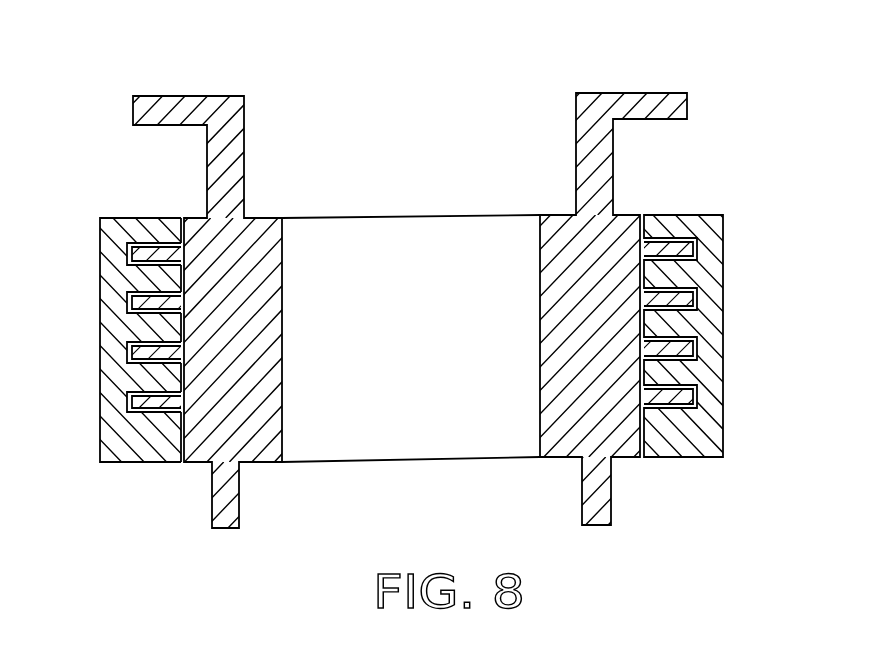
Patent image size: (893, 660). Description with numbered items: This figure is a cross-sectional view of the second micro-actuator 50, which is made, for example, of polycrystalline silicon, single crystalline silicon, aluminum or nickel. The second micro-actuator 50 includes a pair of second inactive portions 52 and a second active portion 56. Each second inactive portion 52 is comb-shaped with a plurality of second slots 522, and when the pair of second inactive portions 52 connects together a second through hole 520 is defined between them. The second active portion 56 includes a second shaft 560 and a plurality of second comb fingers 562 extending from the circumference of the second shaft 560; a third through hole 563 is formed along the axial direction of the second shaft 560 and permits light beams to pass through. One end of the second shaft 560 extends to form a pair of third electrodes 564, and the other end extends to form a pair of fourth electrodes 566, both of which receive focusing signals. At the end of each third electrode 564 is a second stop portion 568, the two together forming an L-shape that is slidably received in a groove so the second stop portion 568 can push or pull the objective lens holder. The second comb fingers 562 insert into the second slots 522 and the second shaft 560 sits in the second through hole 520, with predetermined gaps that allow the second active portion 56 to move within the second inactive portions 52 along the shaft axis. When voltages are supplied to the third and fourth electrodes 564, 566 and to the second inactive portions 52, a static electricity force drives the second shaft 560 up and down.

The second micro-actuator 50 is at (330, 53).
The second inactive portion 52 is at (446, 315).
The second active portion 56 is at (432, 292).
The second through hole 520 is at (182, 223).
The second slot 522 is at (128, 305).
The second shaft 560 is at (572, 257).
The second comb finger 562 is at (138, 253).
The third through hole 563 is at (363, 243).
The third electrode 564 is at (228, 146).
The fourth electrode 566 is at (212, 498).
The second stop portion 568 is at (165, 112).